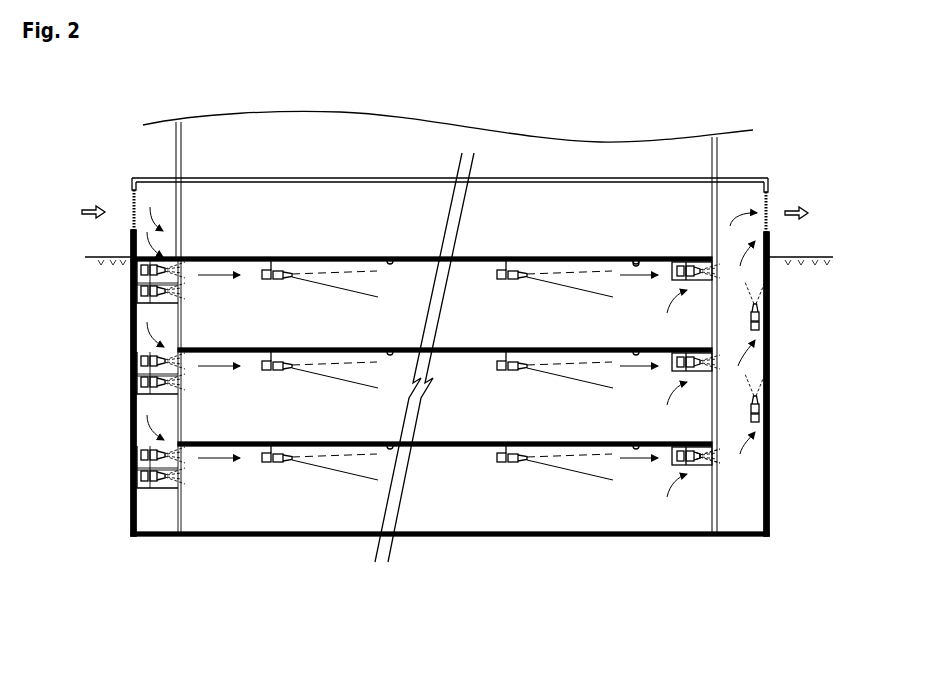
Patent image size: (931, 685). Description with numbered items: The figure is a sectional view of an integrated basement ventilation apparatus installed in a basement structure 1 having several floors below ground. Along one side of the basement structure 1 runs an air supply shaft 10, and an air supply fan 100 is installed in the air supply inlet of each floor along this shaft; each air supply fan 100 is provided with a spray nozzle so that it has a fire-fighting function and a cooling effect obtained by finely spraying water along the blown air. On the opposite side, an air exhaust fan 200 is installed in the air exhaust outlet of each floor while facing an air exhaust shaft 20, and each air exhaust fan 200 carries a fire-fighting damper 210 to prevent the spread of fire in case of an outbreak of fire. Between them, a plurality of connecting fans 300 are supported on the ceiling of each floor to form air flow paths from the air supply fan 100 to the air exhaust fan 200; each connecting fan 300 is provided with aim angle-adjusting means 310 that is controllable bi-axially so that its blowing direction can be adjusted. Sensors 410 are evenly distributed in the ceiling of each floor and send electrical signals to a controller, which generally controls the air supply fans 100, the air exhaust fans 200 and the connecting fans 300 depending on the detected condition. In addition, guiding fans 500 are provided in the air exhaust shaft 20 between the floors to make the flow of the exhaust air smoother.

The basement structure 1 is at (513, 550).
The air supply shaft 10 is at (140, 405).
The air exhaust shaft 20 is at (757, 498).
The air supply fan 100 is at (136, 470).
The air exhaust fan 200 is at (693, 450).
The fire-fighting damper 210 is at (701, 458).
The connecting fan 300 is at (287, 462).
The aim angle-adjusting means 310 is at (292, 262).
The sensor 410 is at (636, 258).
The guiding fan 500 is at (768, 326).